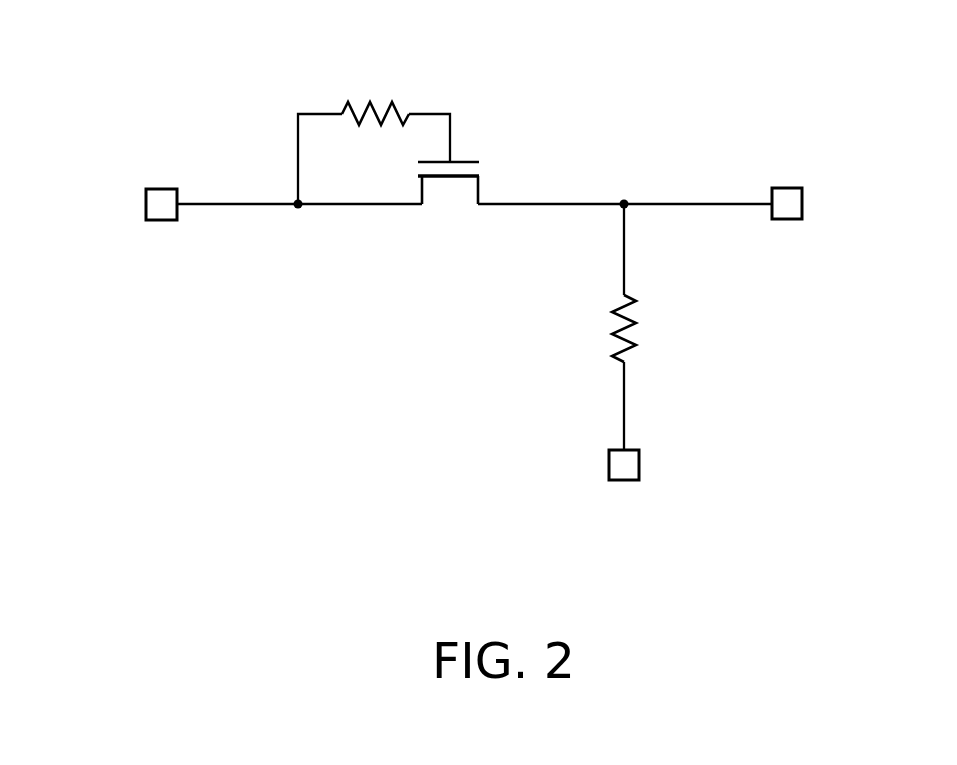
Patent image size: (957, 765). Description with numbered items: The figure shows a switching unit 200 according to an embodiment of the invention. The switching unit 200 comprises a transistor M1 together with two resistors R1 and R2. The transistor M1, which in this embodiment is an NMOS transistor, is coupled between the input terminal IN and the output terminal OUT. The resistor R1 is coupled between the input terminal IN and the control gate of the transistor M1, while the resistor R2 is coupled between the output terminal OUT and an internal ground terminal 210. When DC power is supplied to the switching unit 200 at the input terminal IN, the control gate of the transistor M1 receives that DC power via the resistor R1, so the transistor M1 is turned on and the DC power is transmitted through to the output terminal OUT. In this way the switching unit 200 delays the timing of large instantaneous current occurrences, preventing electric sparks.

The switching unit 200 is at (504, 292).
The internal ground terminal 210 is at (625, 482).
The input terminal IN is at (146, 204).
The output terminal OUT is at (802, 204).
The resistor R1 is at (366, 102).
The resistor R2 is at (638, 322).
The transistor M1 is at (450, 193).